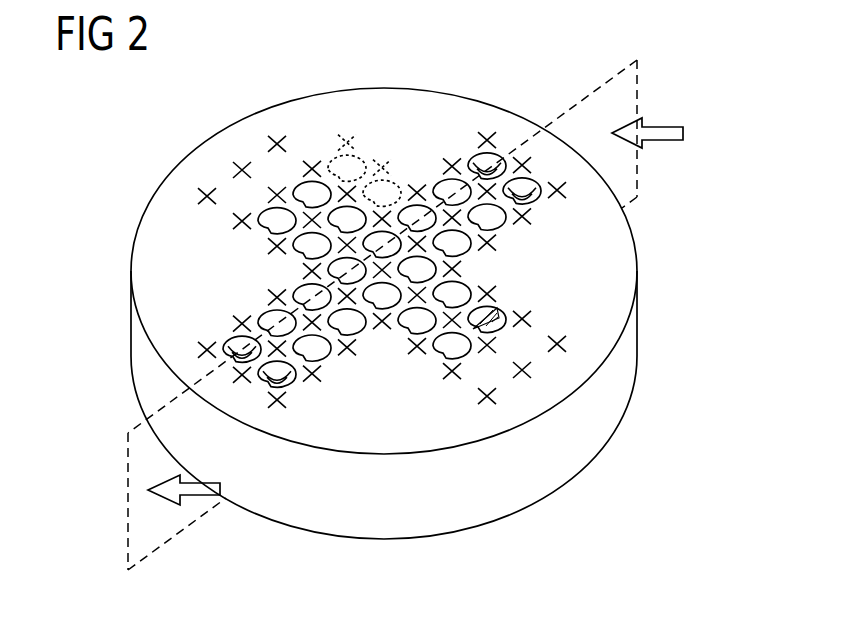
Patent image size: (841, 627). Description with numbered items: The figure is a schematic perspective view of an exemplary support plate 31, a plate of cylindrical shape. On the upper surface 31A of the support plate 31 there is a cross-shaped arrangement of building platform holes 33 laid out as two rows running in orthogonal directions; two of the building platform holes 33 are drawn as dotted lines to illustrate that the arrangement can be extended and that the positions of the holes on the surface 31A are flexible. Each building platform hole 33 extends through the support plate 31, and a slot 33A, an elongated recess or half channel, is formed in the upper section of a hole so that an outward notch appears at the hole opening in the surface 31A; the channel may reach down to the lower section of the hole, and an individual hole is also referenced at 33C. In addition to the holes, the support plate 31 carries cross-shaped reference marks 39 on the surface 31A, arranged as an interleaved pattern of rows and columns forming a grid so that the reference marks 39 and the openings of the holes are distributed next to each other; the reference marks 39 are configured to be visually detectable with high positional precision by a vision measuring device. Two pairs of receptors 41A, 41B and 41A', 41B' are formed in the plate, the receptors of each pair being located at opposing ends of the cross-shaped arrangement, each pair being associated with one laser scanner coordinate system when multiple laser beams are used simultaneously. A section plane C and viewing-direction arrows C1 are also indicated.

The support plate 31 is at (620, 392).
The upper surface 31A is at (143, 255).
The building platform hole 33 is at (500, 307).
The slot 33A is at (490, 312).
The recess / pocket 33C is at (445, 355).
The reference mark 39 is at (562, 198).
The receptor 41A is at (466, 140).
The receptor 41A' is at (532, 136).
The receptor 41B is at (314, 389).
The receptor 41B' is at (220, 322).
The section plane C is at (577, 98).
The viewing direction arrows C1 is at (653, 130).